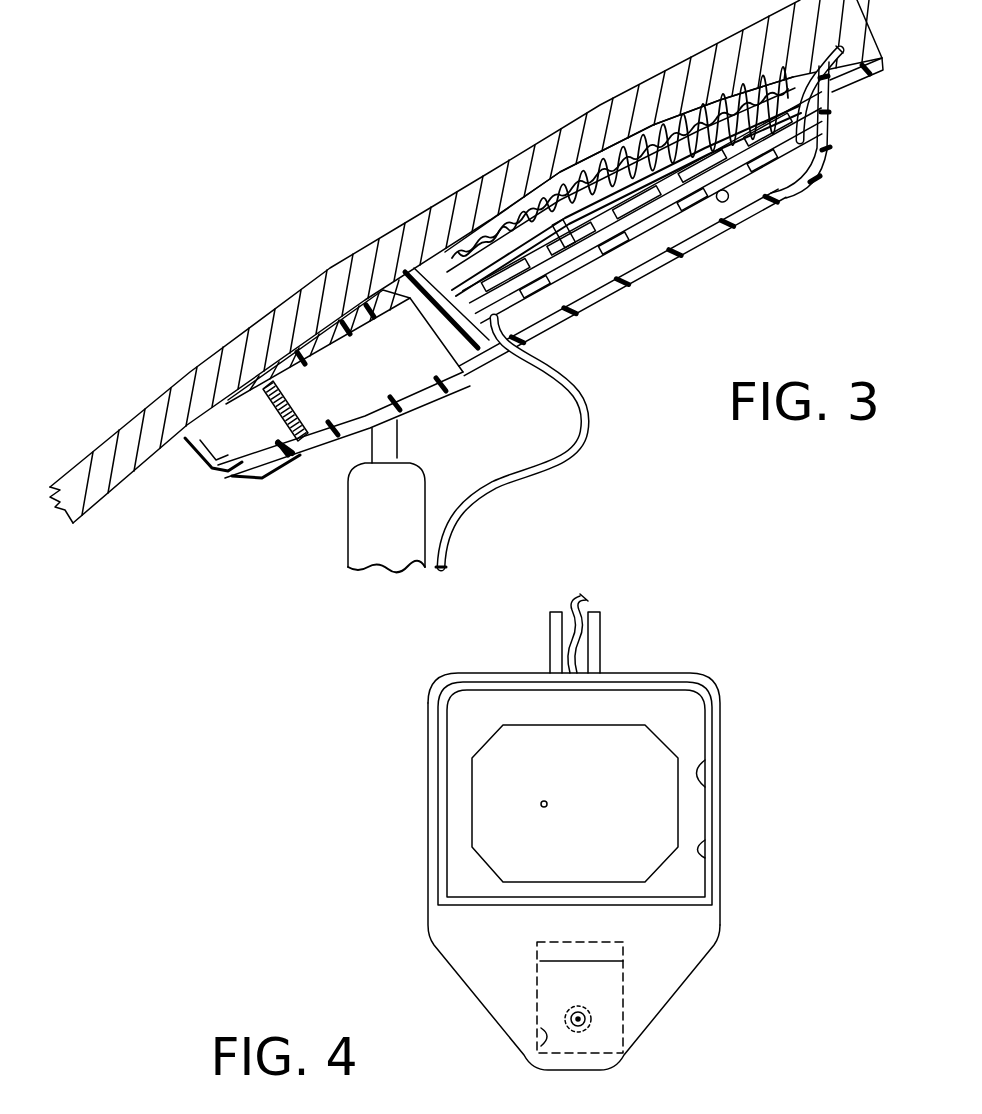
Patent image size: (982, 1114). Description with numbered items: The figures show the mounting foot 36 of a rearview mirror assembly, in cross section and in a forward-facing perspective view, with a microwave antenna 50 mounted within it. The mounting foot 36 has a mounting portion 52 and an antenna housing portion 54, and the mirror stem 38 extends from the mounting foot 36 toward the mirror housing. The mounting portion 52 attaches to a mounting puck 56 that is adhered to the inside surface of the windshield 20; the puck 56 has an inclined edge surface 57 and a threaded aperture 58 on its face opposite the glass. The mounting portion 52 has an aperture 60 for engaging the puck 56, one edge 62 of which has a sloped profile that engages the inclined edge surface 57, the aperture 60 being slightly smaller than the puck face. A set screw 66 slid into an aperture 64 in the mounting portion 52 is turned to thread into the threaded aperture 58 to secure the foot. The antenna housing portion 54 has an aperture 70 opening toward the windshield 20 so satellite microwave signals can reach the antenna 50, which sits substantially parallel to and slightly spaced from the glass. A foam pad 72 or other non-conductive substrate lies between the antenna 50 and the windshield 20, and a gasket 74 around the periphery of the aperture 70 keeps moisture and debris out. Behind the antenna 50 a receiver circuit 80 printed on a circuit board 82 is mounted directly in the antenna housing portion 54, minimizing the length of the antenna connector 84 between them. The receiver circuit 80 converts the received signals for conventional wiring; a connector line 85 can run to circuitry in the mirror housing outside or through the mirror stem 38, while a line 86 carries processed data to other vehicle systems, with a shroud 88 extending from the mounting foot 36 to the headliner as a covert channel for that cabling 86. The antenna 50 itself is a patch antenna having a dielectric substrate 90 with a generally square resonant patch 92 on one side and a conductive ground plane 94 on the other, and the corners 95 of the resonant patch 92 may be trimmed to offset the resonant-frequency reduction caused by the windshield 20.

In FIG. 3, the windshield 20 is at (142, 430).
In FIG. 3, the mounting foot 36 is at (820, 208).
In FIG. 3, the mirror stem 38 is at (360, 537).
In FIG. 3, the microwave antenna 50 is at (455, 267).
In FIG. 4, the microwave antenna 50 is at (467, 883).
In FIG. 3, the mounting portion 52 is at (423, 395).
In FIG. 4, the mounting portion 52 is at (657, 977).
In FIG. 3, the antenna housing portion 54 is at (748, 223).
In FIG. 4, the antenna housing portion 54 is at (720, 836).
In FIG. 3, the mounting puck 56 is at (287, 352).
In FIG. 3, the inclined edge surface 57 is at (363, 305).
In FIG. 3, the threaded aperture 58 is at (228, 367).
In FIG. 3, the aperture 60 is at (207, 407).
In FIG. 4, the aperture 60 is at (540, 1050).
In FIG. 3, the edge 62 is at (320, 340).
In FIG. 4, the edge 62 is at (558, 953).
In FIG. 3, the aperture 64 is at (312, 442).
In FIG. 4, the aperture 64 is at (582, 1026).
In FIG. 3, the set screw 66 is at (277, 447).
In FIG. 3, the aperture 70 is at (567, 176).
In FIG. 4, the aperture 70 is at (719, 833).
In FIG. 3, the foam pad 72 is at (490, 235).
In FIG. 4, the gasket 74 is at (720, 863).
In FIG. 3, the receiver circuit 80 is at (609, 262).
In FIG. 3, the circuit board 82 is at (640, 223).
In FIG. 3, the antenna connector 84 is at (572, 240).
In FIG. 4, the antenna connector 84 is at (541, 807).
In FIG. 3, the connector line 85 is at (452, 548).
In FIG. 3, the line 86 is at (828, 92).
In FIG. 4, the line 86 is at (588, 598).
In FIG. 3, the shroud 88 is at (852, 80).
In FIG. 4, the shroud 88 is at (603, 640).
In FIG. 3, the dielectric substrate 90 is at (718, 130).
In FIG. 4, the dielectric substrate 90 is at (458, 710).
In FIG. 3, the resonant patch 92 is at (653, 153).
In FIG. 4, the resonant patch 92 is at (480, 780).
In FIG. 3, the conductive ground plane 94 is at (822, 182).
In FIG. 4, the corners 95 is at (710, 753).